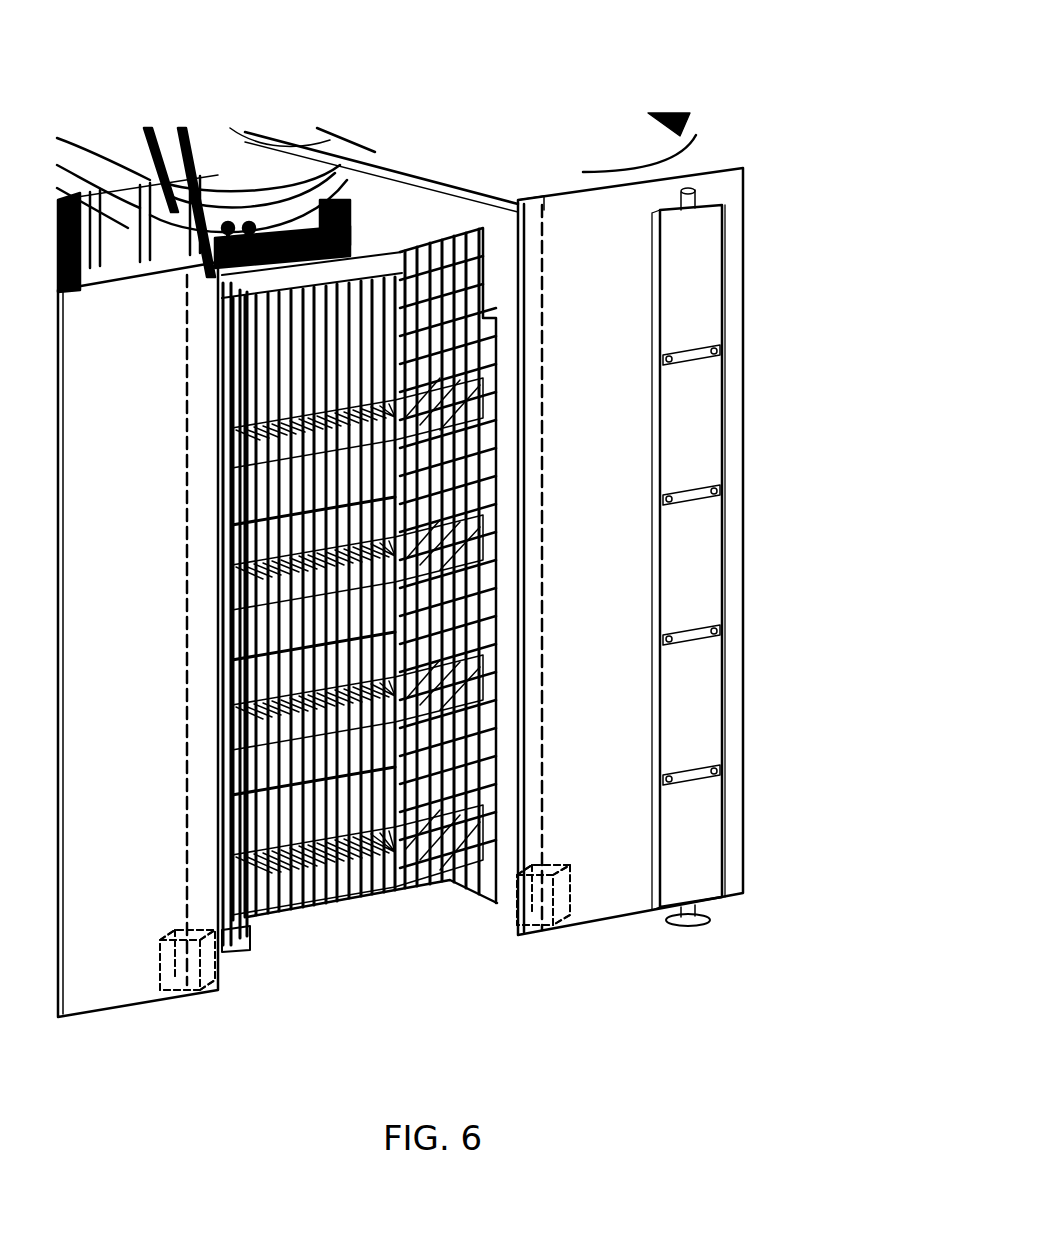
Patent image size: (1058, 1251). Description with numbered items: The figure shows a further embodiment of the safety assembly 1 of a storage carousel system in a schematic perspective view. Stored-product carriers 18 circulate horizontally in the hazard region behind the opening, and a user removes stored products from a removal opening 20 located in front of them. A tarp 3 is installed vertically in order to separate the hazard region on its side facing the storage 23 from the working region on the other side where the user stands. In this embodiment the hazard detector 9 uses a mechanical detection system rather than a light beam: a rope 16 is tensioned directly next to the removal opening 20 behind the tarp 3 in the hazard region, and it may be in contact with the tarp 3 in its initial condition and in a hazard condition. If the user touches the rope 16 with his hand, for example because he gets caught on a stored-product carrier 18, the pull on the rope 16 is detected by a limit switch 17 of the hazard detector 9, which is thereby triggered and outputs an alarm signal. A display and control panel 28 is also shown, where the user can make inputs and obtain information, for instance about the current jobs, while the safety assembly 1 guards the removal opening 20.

The safety assembly 1 is at (703, 74).
The tarp 3 is at (752, 565).
The hazard detector 9 is at (200, 988).
The rope 16 is at (545, 751).
The limit switch 17 is at (365, 963).
The stored-product carrier 18 is at (437, 234).
The removal opening 20 is at (368, 946).
The side facing the storage 23 is at (572, 170).
The display and control panel 28 is at (727, 283).